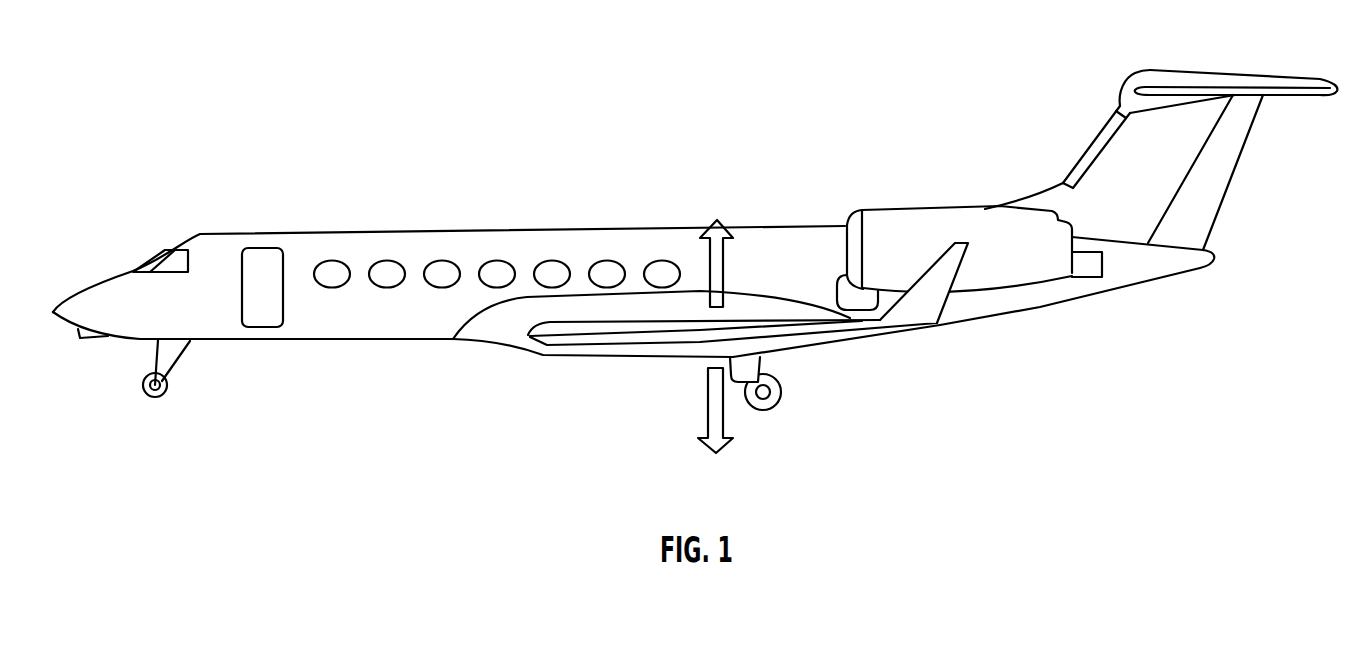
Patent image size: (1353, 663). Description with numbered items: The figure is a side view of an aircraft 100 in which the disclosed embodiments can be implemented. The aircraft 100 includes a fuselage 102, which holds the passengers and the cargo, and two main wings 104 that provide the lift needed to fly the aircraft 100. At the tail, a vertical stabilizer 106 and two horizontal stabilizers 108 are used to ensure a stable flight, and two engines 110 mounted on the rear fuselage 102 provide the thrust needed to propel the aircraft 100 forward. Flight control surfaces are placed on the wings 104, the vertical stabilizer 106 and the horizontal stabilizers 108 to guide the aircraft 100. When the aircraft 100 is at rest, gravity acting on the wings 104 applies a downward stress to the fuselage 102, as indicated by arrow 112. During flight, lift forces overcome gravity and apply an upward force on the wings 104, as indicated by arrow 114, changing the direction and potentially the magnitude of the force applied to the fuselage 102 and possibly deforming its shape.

The aircraft 100 is at (268, 78).
The fuselage 102 is at (465, 229).
The main wing 104 is at (930, 305).
The vertical stabilizer 106 is at (1237, 170).
The horizontal stabilizer 108 is at (1248, 70).
The engine 110 is at (1058, 277).
The arrow 112 is at (707, 401).
The arrow 114 is at (726, 272).